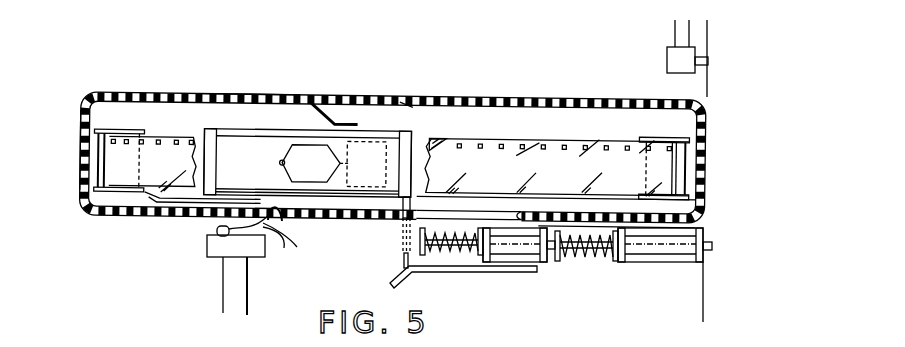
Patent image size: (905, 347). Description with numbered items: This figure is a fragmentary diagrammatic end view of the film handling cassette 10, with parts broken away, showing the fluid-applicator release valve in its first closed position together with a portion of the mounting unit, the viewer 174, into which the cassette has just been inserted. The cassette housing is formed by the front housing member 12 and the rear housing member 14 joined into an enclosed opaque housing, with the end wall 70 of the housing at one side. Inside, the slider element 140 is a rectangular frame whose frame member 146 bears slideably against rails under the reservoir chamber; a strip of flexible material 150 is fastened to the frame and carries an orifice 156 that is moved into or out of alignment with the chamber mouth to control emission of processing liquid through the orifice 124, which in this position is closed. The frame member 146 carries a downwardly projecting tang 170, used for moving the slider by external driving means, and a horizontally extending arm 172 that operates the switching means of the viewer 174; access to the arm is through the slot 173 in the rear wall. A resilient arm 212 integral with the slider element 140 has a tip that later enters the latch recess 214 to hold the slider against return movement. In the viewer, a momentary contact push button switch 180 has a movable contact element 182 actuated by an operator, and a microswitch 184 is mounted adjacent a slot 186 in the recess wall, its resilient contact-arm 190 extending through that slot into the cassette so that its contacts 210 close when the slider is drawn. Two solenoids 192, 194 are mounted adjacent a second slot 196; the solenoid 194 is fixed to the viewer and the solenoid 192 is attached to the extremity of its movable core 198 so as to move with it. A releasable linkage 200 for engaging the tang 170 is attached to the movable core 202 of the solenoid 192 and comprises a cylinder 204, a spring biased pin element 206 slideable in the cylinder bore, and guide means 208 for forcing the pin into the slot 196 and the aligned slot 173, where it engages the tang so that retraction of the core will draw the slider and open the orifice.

The film handling cassette 10 is at (466, 93).
The front housing member 12 is at (244, 92).
The rear housing member 14 is at (136, 213).
The housing end wall 70 is at (82, 106).
The orifice 124 is at (311, 164).
The slider element 140 is at (426, 163).
The frame member 146 is at (258, 177).
The strip of flexible material 150 is at (278, 142).
The orifice 156 is at (282, 158).
The tang 170 is at (418, 200).
The arm 172 is at (176, 134).
The slot 173 is at (492, 205).
The viewer 174 is at (709, 42).
The momentary contact push button switch 180 is at (667, 56).
The movable contact element 182 is at (707, 66).
The microswitch 184 is at (207, 243).
The slot 186 is at (282, 219).
The resilient contact-arm 190 is at (298, 240).
The solenoid 192 is at (495, 263).
The solenoid 194 is at (635, 265).
The second slot 196 is at (526, 215).
The movable core 198 is at (557, 262).
The releasable linkage 200 is at (398, 247).
The movable core 202 is at (447, 256).
The cylinder 204 is at (402, 235).
The spring biased pin element 206 is at (401, 262).
The guide means 208 is at (405, 273).
The contacts 210 is at (284, 248).
The resilient arm 212 is at (335, 116).
The latch recess 214 is at (406, 104).